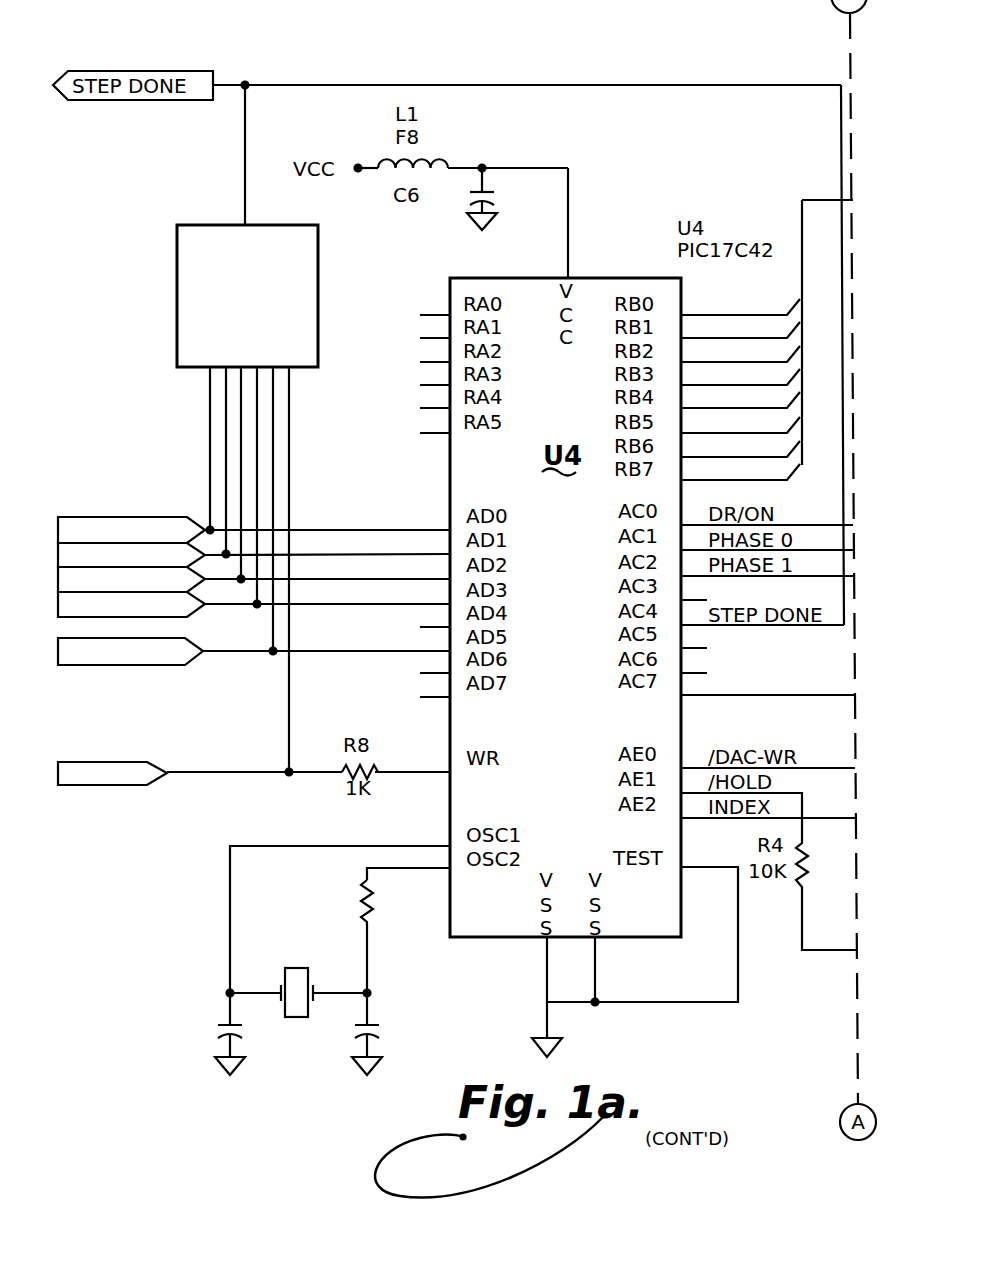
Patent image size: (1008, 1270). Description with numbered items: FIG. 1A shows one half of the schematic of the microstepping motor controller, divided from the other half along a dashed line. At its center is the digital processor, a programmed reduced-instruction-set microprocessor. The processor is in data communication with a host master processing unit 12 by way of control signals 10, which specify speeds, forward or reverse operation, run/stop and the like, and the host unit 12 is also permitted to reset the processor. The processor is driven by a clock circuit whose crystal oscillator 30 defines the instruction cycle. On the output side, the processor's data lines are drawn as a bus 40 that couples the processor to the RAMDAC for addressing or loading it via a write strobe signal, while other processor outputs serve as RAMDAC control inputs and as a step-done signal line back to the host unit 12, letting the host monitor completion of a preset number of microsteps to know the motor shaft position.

The control signals 10 is at (304, 516).
The host master processing unit 12 is at (318, 300).
The crystal oscillator 30 is at (311, 1052).
The bus 40 is at (822, 200).